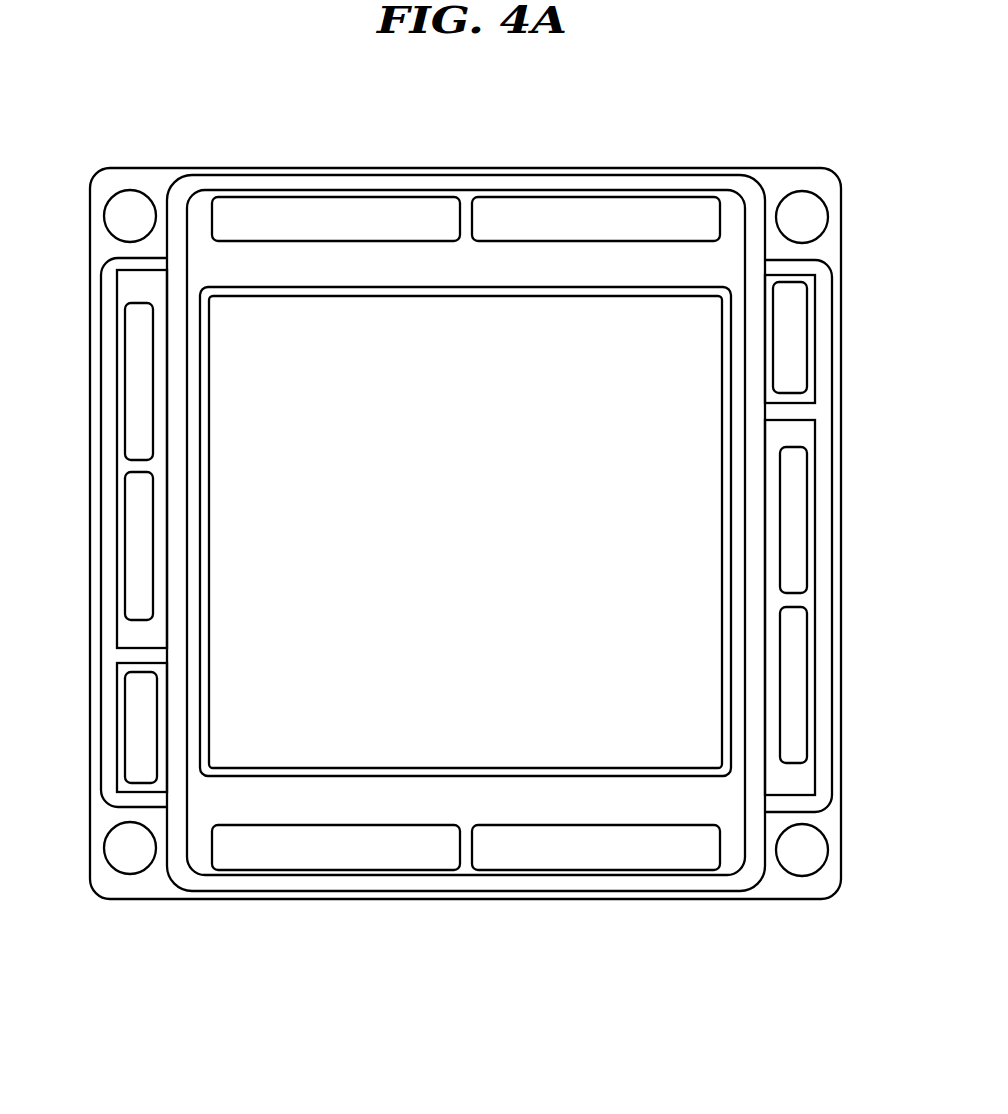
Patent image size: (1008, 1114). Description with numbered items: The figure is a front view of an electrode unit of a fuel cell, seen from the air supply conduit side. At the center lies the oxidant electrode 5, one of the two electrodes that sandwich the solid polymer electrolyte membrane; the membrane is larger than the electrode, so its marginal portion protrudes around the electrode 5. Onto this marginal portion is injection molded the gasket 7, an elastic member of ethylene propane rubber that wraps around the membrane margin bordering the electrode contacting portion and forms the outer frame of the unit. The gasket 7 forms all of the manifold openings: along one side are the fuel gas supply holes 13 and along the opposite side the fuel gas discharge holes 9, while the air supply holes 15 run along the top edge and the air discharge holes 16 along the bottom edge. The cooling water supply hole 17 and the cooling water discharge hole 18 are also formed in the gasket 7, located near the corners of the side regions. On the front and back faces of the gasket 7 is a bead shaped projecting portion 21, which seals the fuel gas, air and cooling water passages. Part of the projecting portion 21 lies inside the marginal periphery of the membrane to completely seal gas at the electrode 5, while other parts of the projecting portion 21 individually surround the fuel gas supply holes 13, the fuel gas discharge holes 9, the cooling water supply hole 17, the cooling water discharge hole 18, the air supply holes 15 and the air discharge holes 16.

The oxidant electrode 5 is at (532, 327).
The gasket 7 is at (783, 183).
The fuel gas discharge holes 9 is at (793, 542).
The fuel gas supply holes 13 is at (138, 430).
The air supply holes 15 is at (370, 213).
The air discharge holes 16 is at (372, 852).
The cooling water supply hole 17 is at (790, 345).
The cooling water discharge hole 18 is at (142, 735).
The projecting portion 21 is at (755, 433).